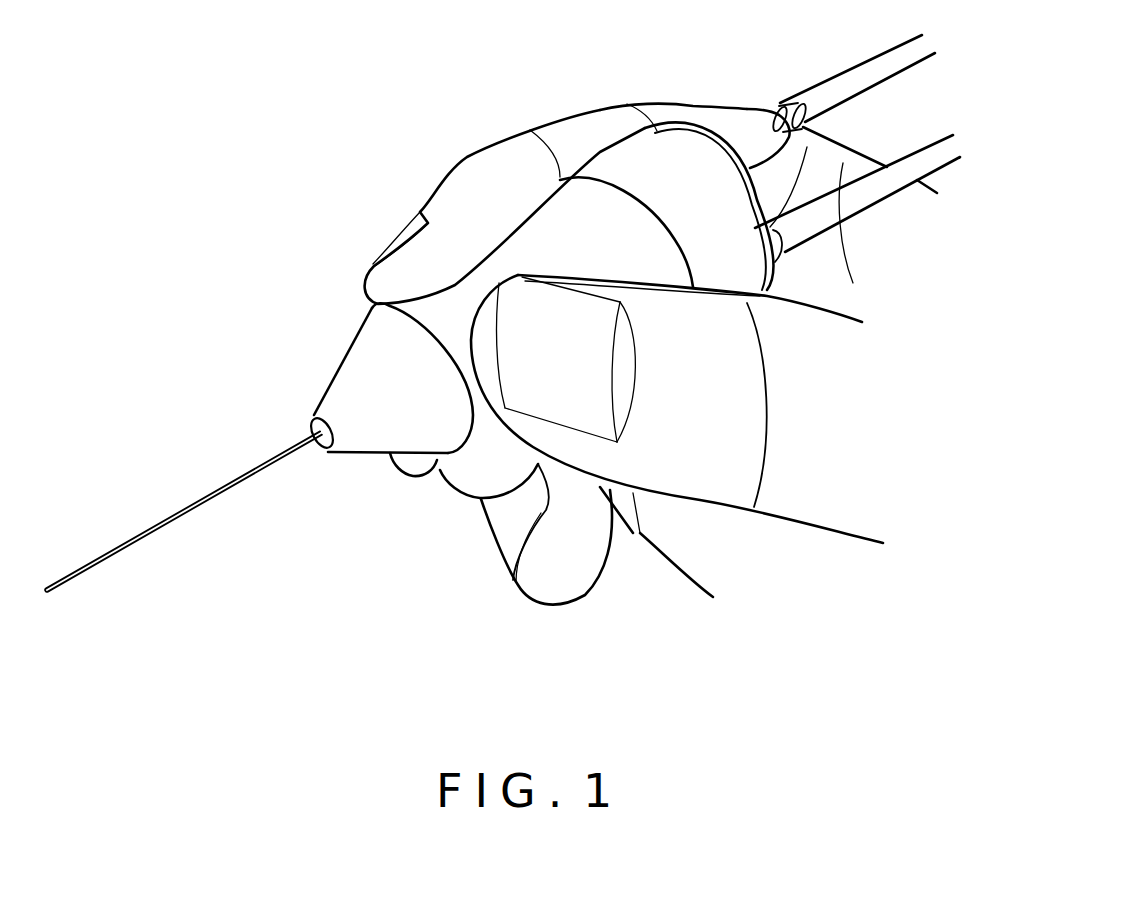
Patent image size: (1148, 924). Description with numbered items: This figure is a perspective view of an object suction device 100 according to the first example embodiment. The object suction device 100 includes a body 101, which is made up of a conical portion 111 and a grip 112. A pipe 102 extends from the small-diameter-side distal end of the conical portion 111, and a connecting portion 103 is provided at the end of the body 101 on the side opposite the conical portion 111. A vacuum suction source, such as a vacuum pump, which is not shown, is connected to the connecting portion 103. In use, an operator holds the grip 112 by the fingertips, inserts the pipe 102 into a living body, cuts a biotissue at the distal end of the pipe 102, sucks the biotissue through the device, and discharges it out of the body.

The object suction device 100 is at (172, 336).
The body 101 is at (295, 245).
The pipe 102 is at (210, 500).
The connecting portion 103 is at (727, 121).
The conical portion 111 is at (373, 370).
The grip 112 is at (473, 298).